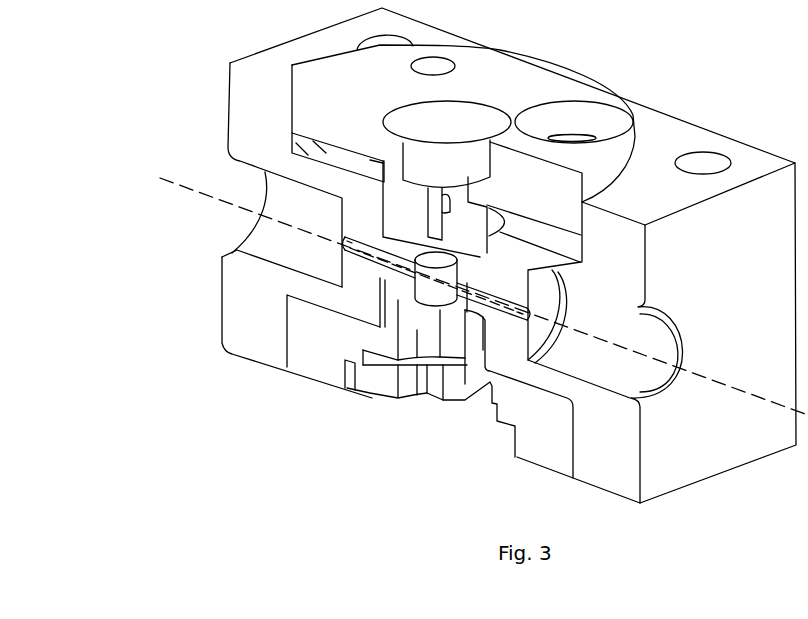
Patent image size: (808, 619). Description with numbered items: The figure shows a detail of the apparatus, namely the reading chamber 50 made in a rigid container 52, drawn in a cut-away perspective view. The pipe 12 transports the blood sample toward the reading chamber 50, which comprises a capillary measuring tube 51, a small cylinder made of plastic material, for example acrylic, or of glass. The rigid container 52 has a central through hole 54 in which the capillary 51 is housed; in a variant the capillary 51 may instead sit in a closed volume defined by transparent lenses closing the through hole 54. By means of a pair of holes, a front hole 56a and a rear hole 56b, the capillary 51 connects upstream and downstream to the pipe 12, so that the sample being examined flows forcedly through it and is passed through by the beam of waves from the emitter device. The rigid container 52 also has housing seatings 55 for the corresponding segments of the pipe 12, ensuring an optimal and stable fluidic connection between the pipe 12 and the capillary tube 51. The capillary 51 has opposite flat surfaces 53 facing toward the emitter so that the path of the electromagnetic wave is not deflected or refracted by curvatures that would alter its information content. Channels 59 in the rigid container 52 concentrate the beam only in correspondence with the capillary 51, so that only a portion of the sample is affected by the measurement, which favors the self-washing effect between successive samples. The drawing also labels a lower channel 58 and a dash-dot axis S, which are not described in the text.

The pipe 12 is at (381, 278).
The reading chamber 50 is at (416, 244).
The capillary measuring tube 51 is at (443, 272).
The rigid container 52 is at (689, 138).
The flat surfaces 53 is at (444, 262).
The central through hole 54 is at (472, 112).
The housing seatings 55 is at (347, 245).
The front hole 56a is at (412, 283).
The rear hole 56b is at (450, 283).
The lower channel 58 is at (435, 280).
The channels 59 is at (453, 190).
The bore axis S is at (712, 387).